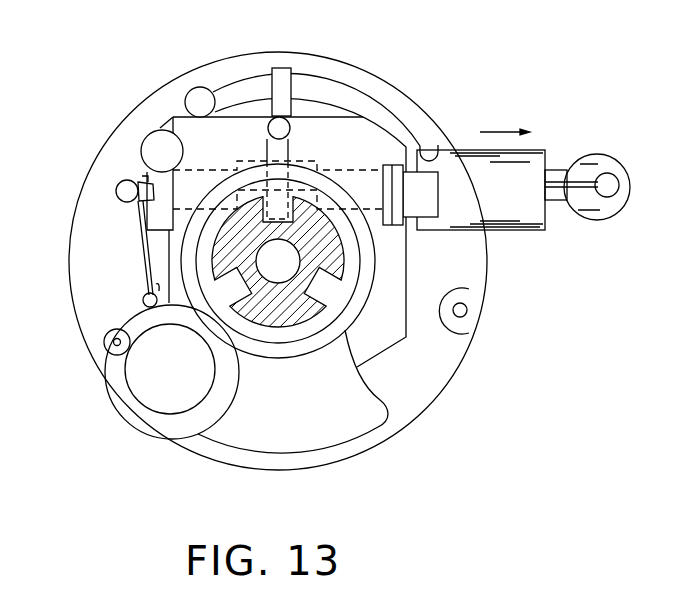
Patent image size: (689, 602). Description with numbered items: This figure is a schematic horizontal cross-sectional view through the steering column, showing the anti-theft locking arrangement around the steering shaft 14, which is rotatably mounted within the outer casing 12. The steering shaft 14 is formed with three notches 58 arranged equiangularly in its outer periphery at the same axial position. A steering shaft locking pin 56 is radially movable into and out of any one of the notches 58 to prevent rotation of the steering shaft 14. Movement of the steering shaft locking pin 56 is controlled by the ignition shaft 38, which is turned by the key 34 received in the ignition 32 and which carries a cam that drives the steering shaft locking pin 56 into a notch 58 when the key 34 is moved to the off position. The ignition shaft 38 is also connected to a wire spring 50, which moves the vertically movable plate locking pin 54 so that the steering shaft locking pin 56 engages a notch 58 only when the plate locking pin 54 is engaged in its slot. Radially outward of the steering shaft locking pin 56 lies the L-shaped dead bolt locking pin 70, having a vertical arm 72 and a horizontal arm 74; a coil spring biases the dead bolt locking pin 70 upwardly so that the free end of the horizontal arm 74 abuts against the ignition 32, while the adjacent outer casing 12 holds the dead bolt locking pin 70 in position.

The outer casing 12 is at (75, 313).
The steering shaft 14 is at (270, 320).
The ignition 32 is at (475, 176).
The key 34 is at (585, 167).
The ignition shaft 38 is at (353, 183).
The wire spring 50 is at (143, 247).
The plate locking pin 54 is at (150, 150).
The steering shaft locking pin 56 is at (280, 205).
The notches 58 is at (233, 293).
The dead bolt locking pin 70 is at (242, 81).
The vertical arm 72 is at (195, 100).
The horizontal arm 74 is at (217, 70).